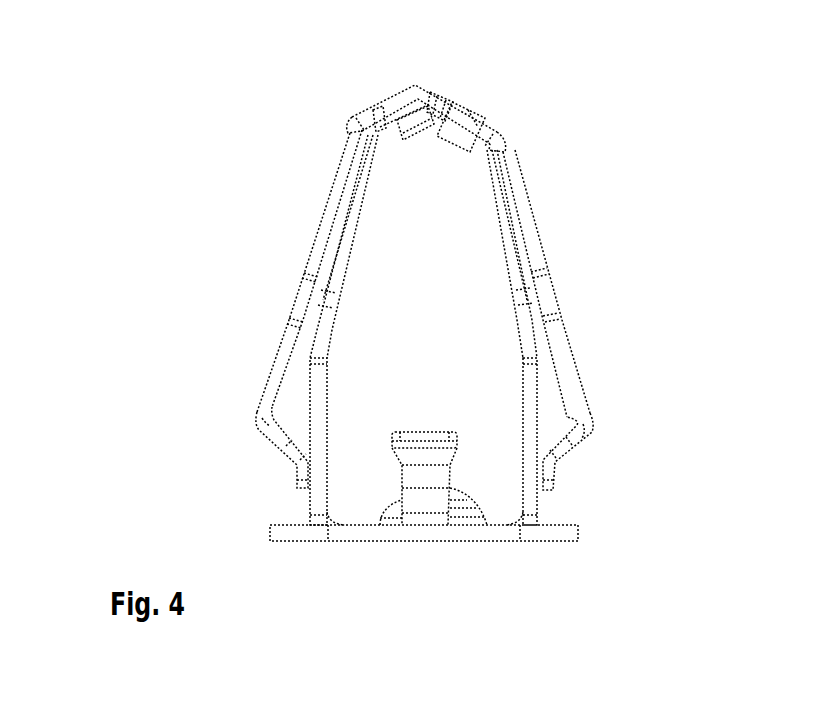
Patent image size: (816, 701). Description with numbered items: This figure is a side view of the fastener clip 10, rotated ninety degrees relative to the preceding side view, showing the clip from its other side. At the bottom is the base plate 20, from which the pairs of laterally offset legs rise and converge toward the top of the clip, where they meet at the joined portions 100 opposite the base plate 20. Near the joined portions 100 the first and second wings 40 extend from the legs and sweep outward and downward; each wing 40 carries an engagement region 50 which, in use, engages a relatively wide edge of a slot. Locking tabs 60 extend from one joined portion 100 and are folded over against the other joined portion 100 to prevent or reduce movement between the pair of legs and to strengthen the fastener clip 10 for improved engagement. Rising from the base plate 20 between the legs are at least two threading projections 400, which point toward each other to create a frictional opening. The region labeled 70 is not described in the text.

The fastener clip 10 is at (88, 56).
The base plate 20 is at (430, 538).
The wing 40 is at (312, 282).
The engagement region 50 is at (288, 448).
The locking tab 60 is at (347, 130).
The foot 70 is at (572, 443).
The joined portion 100 is at (393, 98).
The threading projection 400 is at (430, 447).